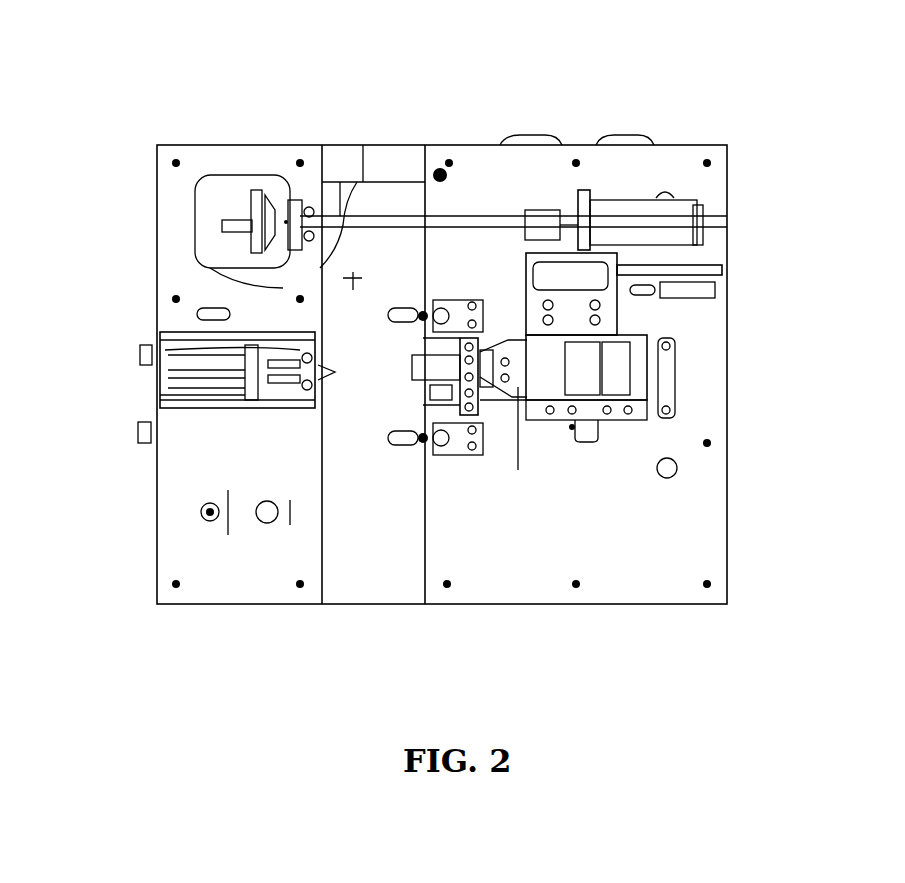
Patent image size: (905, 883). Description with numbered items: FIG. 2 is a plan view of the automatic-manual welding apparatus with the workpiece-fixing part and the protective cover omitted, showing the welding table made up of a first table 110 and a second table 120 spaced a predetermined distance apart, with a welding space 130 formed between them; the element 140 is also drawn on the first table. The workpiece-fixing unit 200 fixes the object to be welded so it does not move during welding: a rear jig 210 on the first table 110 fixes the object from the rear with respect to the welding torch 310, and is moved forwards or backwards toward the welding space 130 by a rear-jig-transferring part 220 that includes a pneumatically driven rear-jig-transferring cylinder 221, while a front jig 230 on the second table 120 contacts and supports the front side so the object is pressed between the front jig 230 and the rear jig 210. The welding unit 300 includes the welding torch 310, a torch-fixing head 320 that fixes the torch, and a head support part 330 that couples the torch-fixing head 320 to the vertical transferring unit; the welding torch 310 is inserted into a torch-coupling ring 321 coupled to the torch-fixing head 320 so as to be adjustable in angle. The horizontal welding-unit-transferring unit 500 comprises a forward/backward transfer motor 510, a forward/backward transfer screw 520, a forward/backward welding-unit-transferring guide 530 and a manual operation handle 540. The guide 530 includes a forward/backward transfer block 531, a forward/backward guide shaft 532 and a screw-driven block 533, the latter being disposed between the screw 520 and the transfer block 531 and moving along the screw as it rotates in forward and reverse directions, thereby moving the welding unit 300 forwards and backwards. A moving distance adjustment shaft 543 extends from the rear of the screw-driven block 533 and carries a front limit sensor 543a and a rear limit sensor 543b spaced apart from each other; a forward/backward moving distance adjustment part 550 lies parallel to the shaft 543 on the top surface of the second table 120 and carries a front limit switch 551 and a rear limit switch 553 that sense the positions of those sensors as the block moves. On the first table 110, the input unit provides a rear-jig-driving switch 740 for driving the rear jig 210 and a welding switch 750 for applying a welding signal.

The first table 110 is at (175, 187).
The second table 120 is at (683, 520).
The welding space 130 is at (353, 280).
The stopper 140 is at (283, 288).
The workpiece-fixing unit 200 is at (52, 450).
The rear jig 210 is at (305, 400).
The rear-jig-transferring part 220 is at (423, 387).
The rear-jig-transferring cylinder 221 is at (138, 355).
The front jig 230 is at (138, 437).
The welding unit 300 is at (578, 658).
The welding torch 310 is at (465, 455).
The torch-fixing head 320 is at (490, 447).
The head support part 330 is at (518, 470).
The torch-coupling ring 321 is at (190, 318).
The horizontal welding-unit-transferring unit 500 is at (425, 58).
The forward/backward transfer motor 510 is at (633, 213).
The forward/backward transfer screw 520 is at (363, 145).
The forward/backward welding-unit-transferring guide 530 is at (797, 350).
The forward/backward transfer block 531 is at (640, 380).
The forward/backward guide shaft 532 is at (650, 420).
The screw-driven block 533 is at (677, 355).
The manual operation handle 540 is at (296, 145).
The moving distance adjustment shaft 543 is at (700, 240).
The front limit sensor 543a is at (690, 250).
The rear limit sensor 543b is at (703, 245).
The forward/backward moving distance adjustment part 550 is at (797, 282).
The front limit switch 551 is at (657, 296).
The rear limit switch 553 is at (645, 280).
The rear-jig-driving switch 740 is at (205, 520).
The welding switch 750 is at (265, 523).